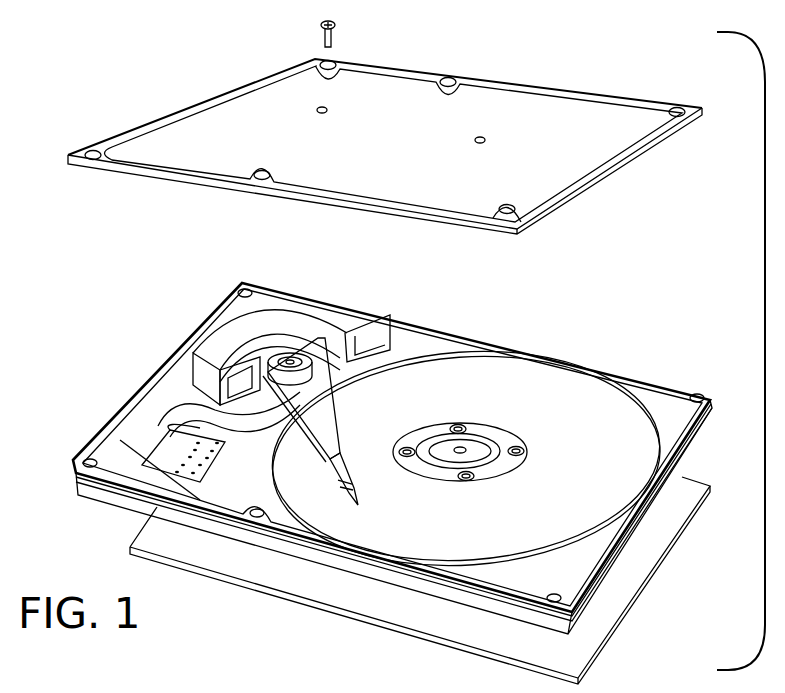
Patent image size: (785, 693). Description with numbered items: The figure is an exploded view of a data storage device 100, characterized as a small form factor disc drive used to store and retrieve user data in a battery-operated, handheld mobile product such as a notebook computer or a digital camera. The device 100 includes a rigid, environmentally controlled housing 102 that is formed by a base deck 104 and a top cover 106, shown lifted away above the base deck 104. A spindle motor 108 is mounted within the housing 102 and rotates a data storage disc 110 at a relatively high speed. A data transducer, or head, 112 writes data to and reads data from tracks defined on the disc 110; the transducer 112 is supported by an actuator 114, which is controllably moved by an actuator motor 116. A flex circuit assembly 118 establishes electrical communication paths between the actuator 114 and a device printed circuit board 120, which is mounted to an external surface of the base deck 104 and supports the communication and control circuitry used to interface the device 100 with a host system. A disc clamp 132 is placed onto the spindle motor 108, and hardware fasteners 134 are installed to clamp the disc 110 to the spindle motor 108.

The data storage device 100 is at (125, 62).
The housing 102 is at (113, 283).
The base deck 104 is at (630, 535).
The top cover 106 is at (477, 98).
The spindle motor 108 is at (478, 432).
The data storage disc 110 is at (485, 569).
The data transducer (head) 112 is at (353, 507).
The actuator 114 is at (327, 422).
The actuator motor 116 is at (333, 320).
The flex circuit assembly 118 is at (190, 413).
The device printed circuit board (PCB) 120 is at (220, 575).
The disc clamp 132 is at (510, 467).
The hardware fasteners 134 is at (517, 452).